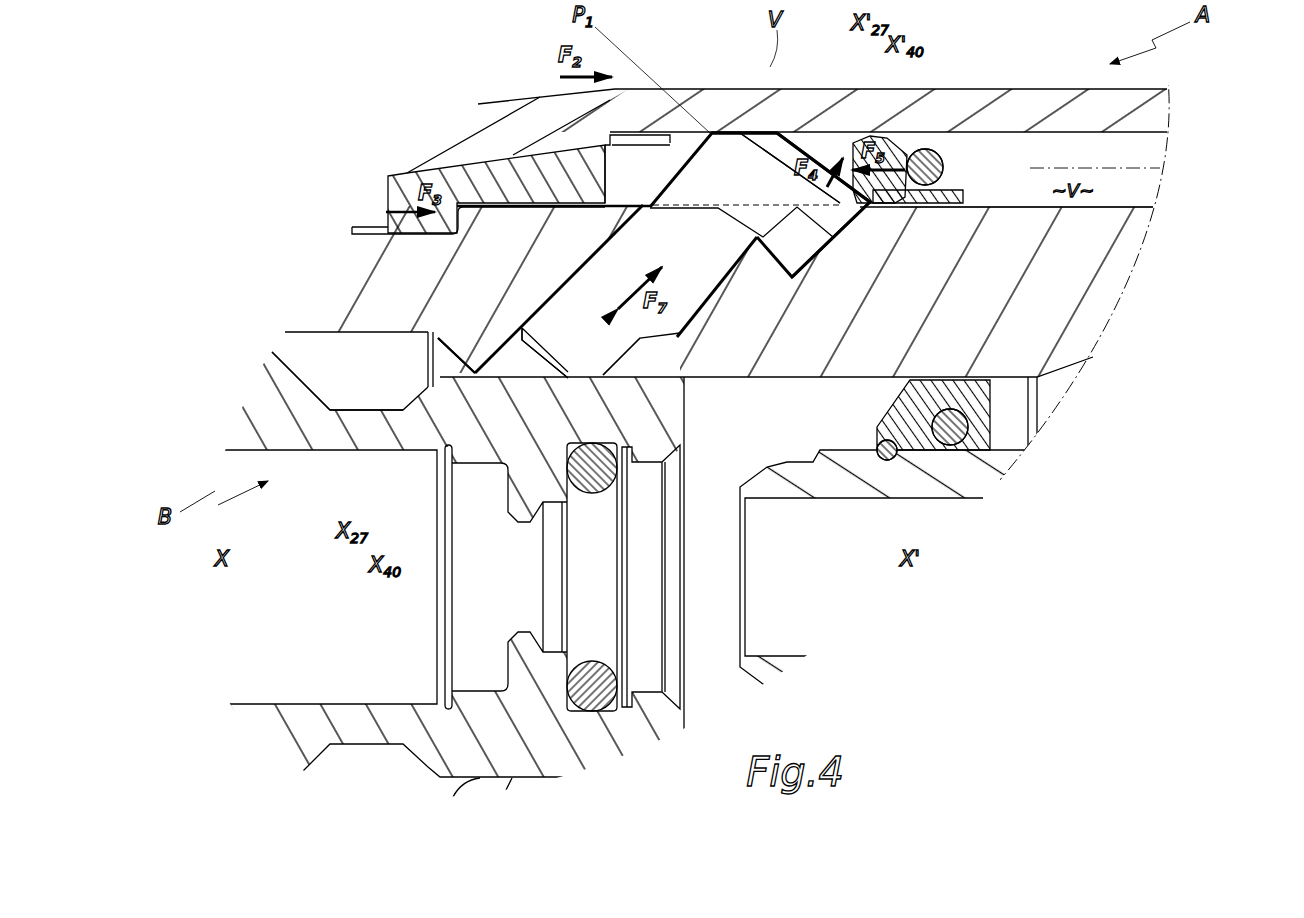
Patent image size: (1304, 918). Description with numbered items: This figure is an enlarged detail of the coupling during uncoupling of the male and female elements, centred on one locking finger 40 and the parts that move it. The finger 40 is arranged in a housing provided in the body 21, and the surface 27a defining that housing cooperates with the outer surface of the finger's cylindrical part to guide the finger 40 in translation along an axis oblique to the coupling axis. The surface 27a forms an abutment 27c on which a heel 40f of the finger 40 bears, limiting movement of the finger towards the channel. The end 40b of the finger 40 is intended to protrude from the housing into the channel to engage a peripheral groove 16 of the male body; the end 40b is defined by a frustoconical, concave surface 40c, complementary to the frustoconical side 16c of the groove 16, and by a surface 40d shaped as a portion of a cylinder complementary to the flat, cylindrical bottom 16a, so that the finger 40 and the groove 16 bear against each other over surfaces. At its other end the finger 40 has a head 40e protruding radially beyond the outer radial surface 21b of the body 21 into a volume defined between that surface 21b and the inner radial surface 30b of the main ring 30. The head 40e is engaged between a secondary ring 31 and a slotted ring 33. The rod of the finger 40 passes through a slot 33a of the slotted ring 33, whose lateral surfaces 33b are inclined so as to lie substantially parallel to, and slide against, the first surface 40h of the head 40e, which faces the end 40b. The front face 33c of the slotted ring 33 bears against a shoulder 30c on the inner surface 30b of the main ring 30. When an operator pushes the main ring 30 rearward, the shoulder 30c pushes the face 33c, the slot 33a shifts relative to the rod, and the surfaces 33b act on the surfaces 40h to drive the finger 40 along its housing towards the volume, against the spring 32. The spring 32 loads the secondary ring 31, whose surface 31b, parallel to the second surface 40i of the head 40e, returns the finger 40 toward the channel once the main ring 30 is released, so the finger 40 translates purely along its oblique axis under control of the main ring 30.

The peripheral groove 16 is at (343, 360).
The bottom 16a is at (357, 407).
The side 16c is at (423, 393).
The body 21 is at (1085, 308).
The outer radial surface 21b is at (1118, 204).
The surface defining the housing 27a is at (597, 268).
The abutment 27c is at (820, 275).
The main ring 30 is at (1143, 100).
The inner radial surface 30b is at (1128, 137).
The shoulder 30c is at (400, 172).
The secondary ring 31 is at (905, 135).
The surface 31b is at (890, 212).
The spring 32 is at (1153, 162).
The slotted ring 33 is at (463, 173).
The slot 33a is at (730, 135).
The surface 33b is at (877, 133).
The front face 33c is at (378, 214).
The finger 40 is at (565, 188).
The end 40b is at (547, 326).
The frustoconical concave surface 40c is at (560, 372).
The part-cylindrical surface 40d is at (567, 380).
The head 40e is at (795, 143).
The heel 40f is at (835, 238).
The first surface 40h is at (745, 130).
The second surface 40i is at (808, 140).